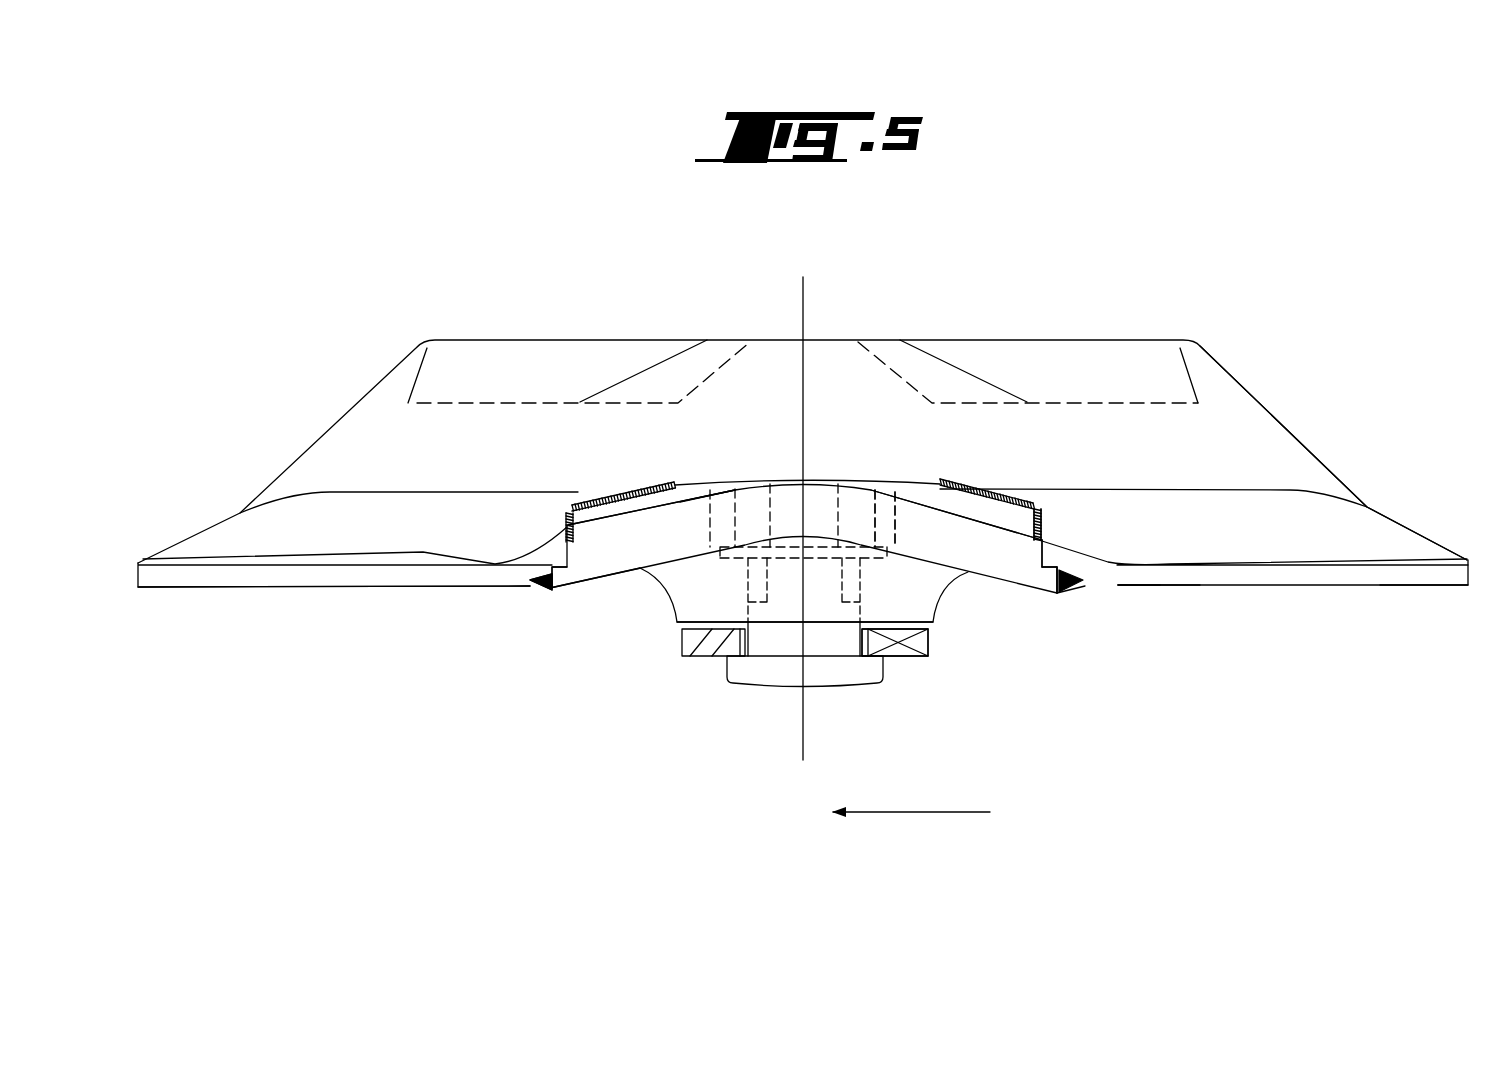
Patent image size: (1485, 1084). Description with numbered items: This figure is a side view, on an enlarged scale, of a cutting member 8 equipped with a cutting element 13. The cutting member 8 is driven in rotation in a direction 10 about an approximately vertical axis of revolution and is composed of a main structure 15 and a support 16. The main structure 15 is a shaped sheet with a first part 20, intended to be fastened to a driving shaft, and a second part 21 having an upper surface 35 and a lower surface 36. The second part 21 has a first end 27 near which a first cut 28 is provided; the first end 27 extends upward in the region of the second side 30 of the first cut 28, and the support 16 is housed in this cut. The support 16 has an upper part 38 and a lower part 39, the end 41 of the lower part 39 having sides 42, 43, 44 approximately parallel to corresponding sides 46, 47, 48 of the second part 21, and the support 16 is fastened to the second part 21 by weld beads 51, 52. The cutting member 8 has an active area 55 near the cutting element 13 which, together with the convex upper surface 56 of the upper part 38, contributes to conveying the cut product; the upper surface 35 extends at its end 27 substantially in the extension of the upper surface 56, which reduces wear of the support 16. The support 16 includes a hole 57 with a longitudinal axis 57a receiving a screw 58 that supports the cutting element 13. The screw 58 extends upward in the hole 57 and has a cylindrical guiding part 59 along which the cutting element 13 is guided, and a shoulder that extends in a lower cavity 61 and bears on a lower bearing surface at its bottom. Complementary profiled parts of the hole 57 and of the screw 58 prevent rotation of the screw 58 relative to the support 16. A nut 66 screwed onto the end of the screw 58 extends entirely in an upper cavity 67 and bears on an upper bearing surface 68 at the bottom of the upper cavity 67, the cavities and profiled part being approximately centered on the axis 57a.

The cutting member 8 is at (1070, 338).
The direction of rotation 10 is at (887, 812).
The cutting element 13 is at (928, 658).
The main structure 15 is at (1270, 413).
The support 16 is at (571, 594).
The first part 20 is at (921, 338).
The second part 21 is at (223, 593).
The first end 27 is at (1138, 590).
The first cut 28 is at (1039, 575).
The second side 30 is at (1040, 557).
The upper surface 35 is at (1281, 547).
The lower surface 36 is at (1338, 588).
The upper part 38 is at (990, 490).
The lower part 39 is at (673, 630).
The end of the lower part 41 is at (540, 590).
The side of the end of the lower part 42 is at (641, 561).
The side of the end of the lower part 43 is at (550, 588).
The side of the end of the lower part 44 is at (1077, 583).
The side of the second part 46 is at (1107, 587).
The side of the second part 47 is at (1428, 577).
The side of the second part 48 is at (278, 578).
The weld bead 51 is at (1043, 509).
The weld bead 52 is at (540, 583).
The active area 55 is at (640, 519).
The convex upper surface 56 is at (703, 495).
The hole 57 is at (905, 478).
The longitudinal axis of the hole 57a is at (803, 320).
The screw 58 is at (792, 693).
The cylindrical guiding part 59 is at (832, 642).
The lower cavity 61 is at (853, 598).
The nut 66 is at (820, 503).
The upper cavity 67 is at (885, 513).
The upper bearing surface 68 is at (740, 560).